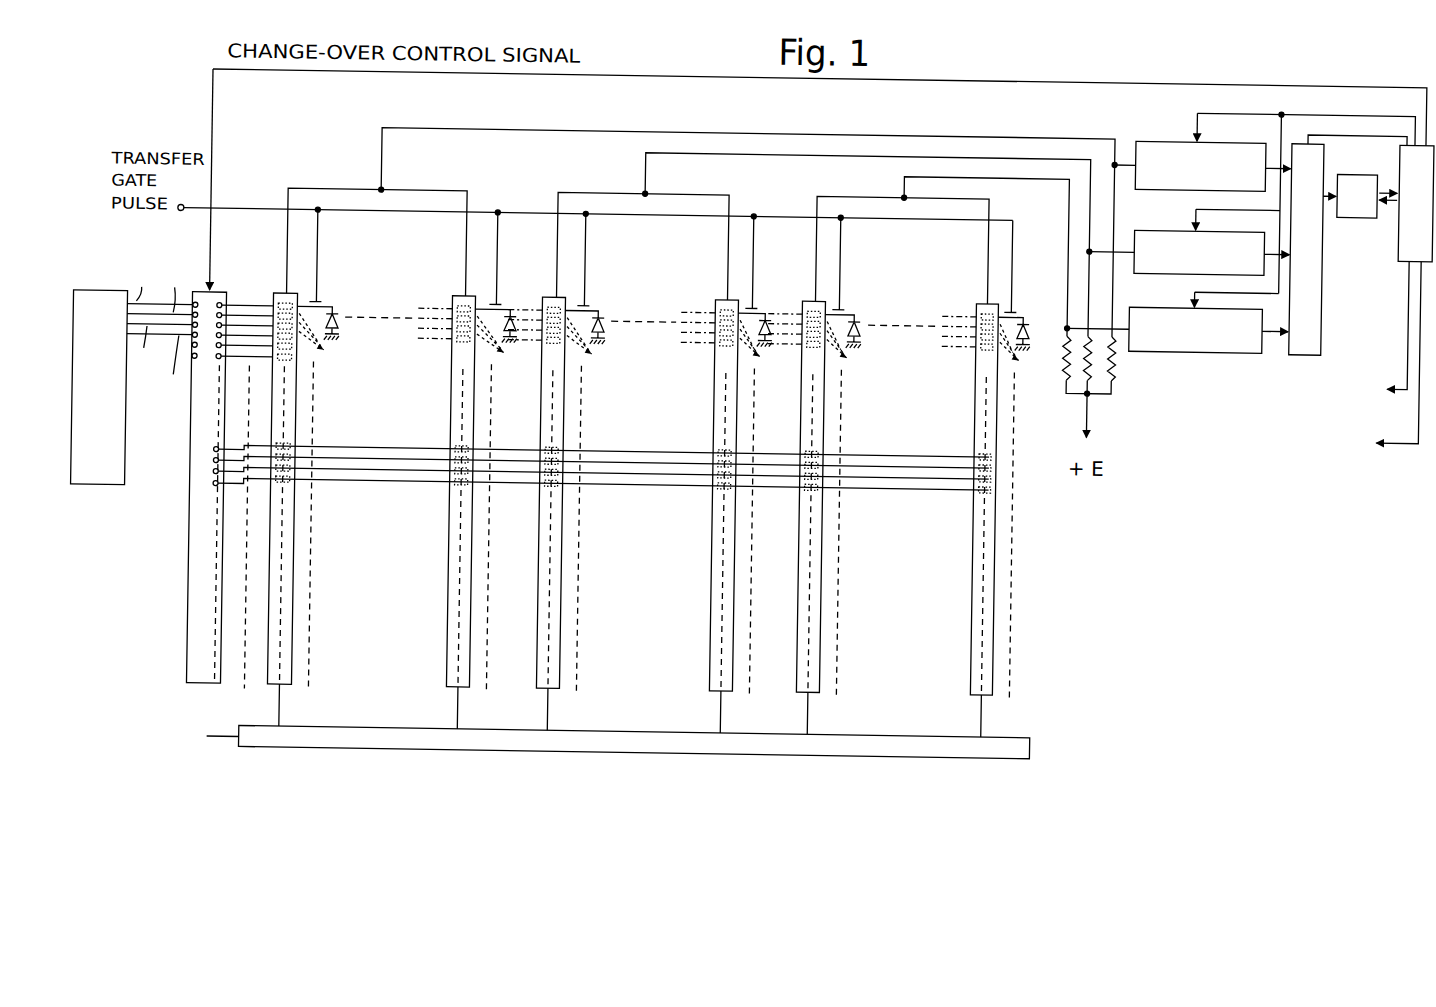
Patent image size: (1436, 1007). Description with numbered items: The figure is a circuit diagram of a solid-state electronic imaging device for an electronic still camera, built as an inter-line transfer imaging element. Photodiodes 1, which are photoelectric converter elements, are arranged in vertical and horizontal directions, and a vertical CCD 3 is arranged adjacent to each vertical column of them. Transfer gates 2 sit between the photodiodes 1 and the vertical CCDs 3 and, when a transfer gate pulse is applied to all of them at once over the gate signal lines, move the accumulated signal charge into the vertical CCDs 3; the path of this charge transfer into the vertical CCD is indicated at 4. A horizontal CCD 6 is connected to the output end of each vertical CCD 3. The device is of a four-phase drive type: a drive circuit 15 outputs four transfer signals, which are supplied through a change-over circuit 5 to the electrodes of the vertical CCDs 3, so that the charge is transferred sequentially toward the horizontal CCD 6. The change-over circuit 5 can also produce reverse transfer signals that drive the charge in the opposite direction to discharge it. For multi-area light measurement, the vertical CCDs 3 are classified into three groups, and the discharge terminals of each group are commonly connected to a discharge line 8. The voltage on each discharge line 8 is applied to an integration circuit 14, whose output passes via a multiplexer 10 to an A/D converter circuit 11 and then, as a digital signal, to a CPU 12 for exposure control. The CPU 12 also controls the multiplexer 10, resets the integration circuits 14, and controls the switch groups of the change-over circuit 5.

The photodiode 1 is at (351, 309).
The transfer gate 2 is at (322, 299).
The vertical CCD 3 is at (301, 530).
The charge transfer path 4 is at (664, 349).
The change-over circuit 5 is at (196, 544).
The horizontal CCD 6 is at (661, 746).
The discharge line 8 is at (384, 161).
The multiplexer 10 is at (1325, 331).
The A/D converter circuit 11 is at (1353, 201).
The CPU 12 is at (1403, 218).
The integration circuit 14 is at (1146, 127).
The drive circuit 15 is at (131, 468).